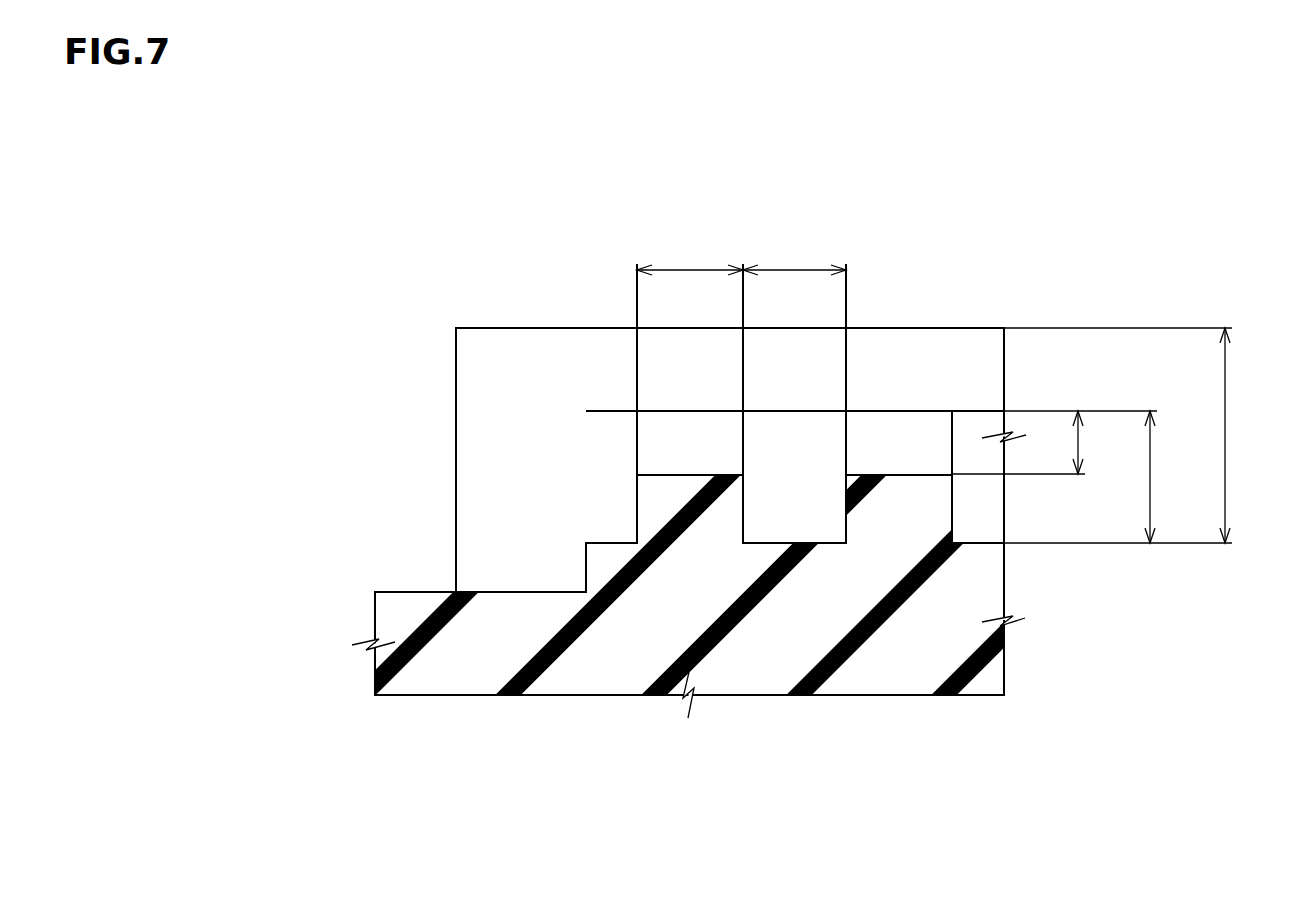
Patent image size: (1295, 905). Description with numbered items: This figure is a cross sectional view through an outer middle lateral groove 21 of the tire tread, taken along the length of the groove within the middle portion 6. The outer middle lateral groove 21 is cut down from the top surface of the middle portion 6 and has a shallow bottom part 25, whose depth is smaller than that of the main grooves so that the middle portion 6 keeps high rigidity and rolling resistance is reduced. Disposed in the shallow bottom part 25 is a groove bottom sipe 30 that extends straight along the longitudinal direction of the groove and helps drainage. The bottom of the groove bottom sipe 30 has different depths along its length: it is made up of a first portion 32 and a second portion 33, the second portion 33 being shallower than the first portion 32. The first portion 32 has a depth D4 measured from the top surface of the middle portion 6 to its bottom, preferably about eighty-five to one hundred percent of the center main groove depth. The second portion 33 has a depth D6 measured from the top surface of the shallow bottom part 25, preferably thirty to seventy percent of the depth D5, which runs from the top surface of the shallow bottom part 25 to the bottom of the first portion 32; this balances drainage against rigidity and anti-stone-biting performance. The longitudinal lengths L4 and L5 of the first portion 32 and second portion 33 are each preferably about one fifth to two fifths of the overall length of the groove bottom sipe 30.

The middle portion 6 is at (958, 325).
The outer middle lateral groove 21 is at (538, 376).
The shallow bottom part 25 is at (898, 411).
The groove bottom sipe 30 is at (840, 810).
The first portion 32 is at (612, 532).
The second portion 33 is at (921, 466).
The longitudinal length of the first portion L4 is at (794, 259).
The longitudinal length of the second portion L5 is at (690, 259).
The depth of the first portion D4 is at (1140, 435).
The depth from the shallow bottom part to the first portion bottom D5 is at (1172, 477).
The depth of the second portion D6 is at (1054, 442).